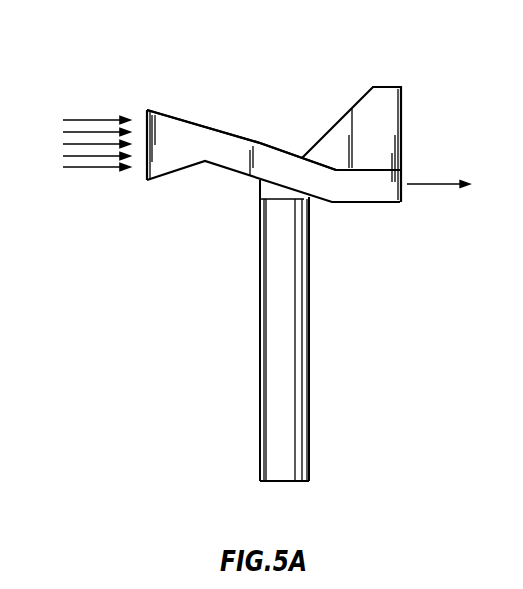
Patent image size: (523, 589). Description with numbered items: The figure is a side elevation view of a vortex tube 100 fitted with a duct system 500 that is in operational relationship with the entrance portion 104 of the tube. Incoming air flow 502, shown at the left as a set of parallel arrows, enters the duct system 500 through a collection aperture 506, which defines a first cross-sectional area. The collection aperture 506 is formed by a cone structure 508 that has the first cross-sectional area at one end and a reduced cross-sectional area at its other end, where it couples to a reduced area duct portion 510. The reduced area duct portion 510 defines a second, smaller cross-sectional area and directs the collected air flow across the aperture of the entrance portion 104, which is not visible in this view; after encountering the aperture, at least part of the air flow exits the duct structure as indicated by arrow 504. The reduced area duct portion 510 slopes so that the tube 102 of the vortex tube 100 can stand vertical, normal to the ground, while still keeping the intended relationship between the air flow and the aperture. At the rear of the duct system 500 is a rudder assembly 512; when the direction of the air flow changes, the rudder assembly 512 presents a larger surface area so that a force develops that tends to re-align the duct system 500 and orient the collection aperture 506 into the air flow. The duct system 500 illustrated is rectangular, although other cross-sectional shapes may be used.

The vortex tube 100 is at (265, 330).
The tube 102 is at (310, 385).
The entrance portion 104 is at (238, 190).
The duct system 500 is at (295, 106).
The air flow 502 is at (82, 101).
The arrow 504 is at (428, 183).
The collection aperture 506 is at (146, 110).
The cone structure 508 is at (168, 115).
The reduced area duct portion 510 is at (231, 136).
The rudder assembly 512 is at (383, 96).